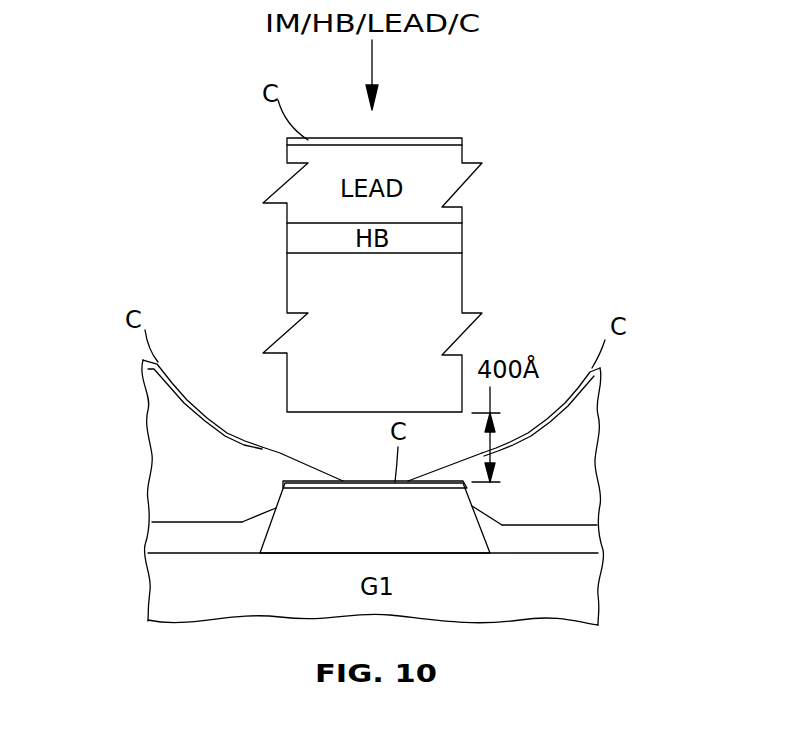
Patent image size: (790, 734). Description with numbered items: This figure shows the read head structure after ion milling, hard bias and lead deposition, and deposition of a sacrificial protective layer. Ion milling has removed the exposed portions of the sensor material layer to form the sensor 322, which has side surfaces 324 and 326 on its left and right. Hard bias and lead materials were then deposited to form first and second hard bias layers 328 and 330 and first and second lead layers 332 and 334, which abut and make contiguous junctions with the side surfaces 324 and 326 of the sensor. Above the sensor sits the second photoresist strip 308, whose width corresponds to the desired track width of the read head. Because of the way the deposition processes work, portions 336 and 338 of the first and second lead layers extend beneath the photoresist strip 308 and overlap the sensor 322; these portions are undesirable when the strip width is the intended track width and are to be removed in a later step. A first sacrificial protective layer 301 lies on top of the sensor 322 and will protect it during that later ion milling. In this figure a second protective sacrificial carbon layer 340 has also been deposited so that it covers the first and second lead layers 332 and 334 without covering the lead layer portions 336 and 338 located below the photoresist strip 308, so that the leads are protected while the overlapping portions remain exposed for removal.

The first sacrificial protective layer 301 is at (362, 482).
The second photoresist strip 308 is at (397, 348).
The sensor 322 is at (455, 538).
The side surface 324 is at (273, 510).
The side surface 326 is at (478, 510).
The first hard bias layer 328 is at (153, 535).
The second hard bias layer 330 is at (597, 542).
The first lead layer 332 is at (150, 410).
The second lead layer 334 is at (590, 410).
The portion of the first lead layer 336 is at (300, 468).
The portion of the second lead layer 338 is at (438, 468).
The second protective sacrificial carbon layer 340 is at (185, 393).